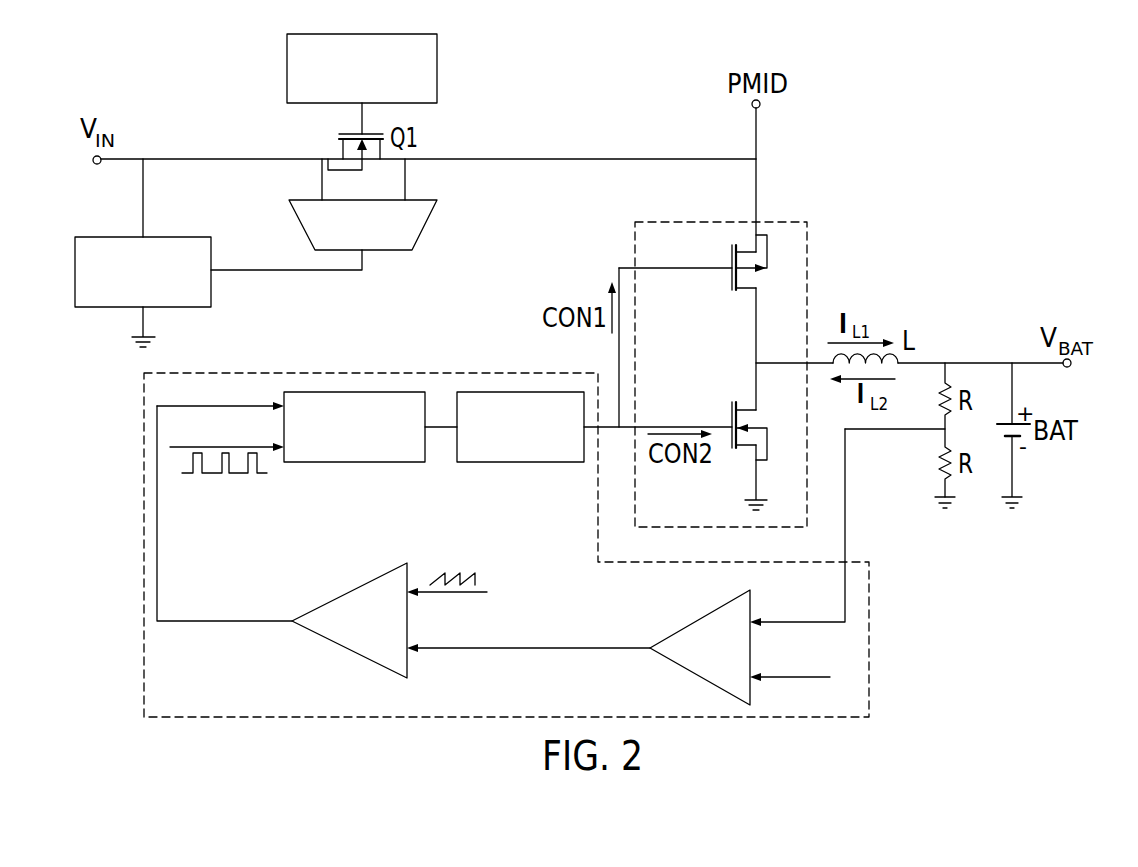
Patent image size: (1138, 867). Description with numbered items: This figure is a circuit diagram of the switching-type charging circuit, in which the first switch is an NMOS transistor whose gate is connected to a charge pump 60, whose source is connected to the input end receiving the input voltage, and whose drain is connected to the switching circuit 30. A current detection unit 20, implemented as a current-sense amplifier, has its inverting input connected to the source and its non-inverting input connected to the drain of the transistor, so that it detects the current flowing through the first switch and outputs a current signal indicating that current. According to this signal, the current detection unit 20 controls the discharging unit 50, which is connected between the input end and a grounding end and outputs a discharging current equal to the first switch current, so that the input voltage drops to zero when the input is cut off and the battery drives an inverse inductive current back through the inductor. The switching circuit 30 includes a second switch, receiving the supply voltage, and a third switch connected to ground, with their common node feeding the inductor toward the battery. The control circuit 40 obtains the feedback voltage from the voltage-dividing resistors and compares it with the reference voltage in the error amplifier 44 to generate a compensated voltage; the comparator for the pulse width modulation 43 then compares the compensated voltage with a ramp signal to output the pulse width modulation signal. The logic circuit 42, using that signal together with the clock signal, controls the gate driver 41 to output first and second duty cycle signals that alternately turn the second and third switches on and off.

The current detection unit 20 is at (423, 227).
The switching circuit 30 is at (808, 270).
The control circuit 40 is at (539, 545).
The gate driver 41 is at (520, 462).
The logic circuit 42 is at (350, 462).
The comparator for the pulse width modulation 43 is at (352, 588).
The error amplifier 44 is at (698, 617).
The discharging unit 50 is at (175, 237).
The charge pump 60 is at (437, 68).